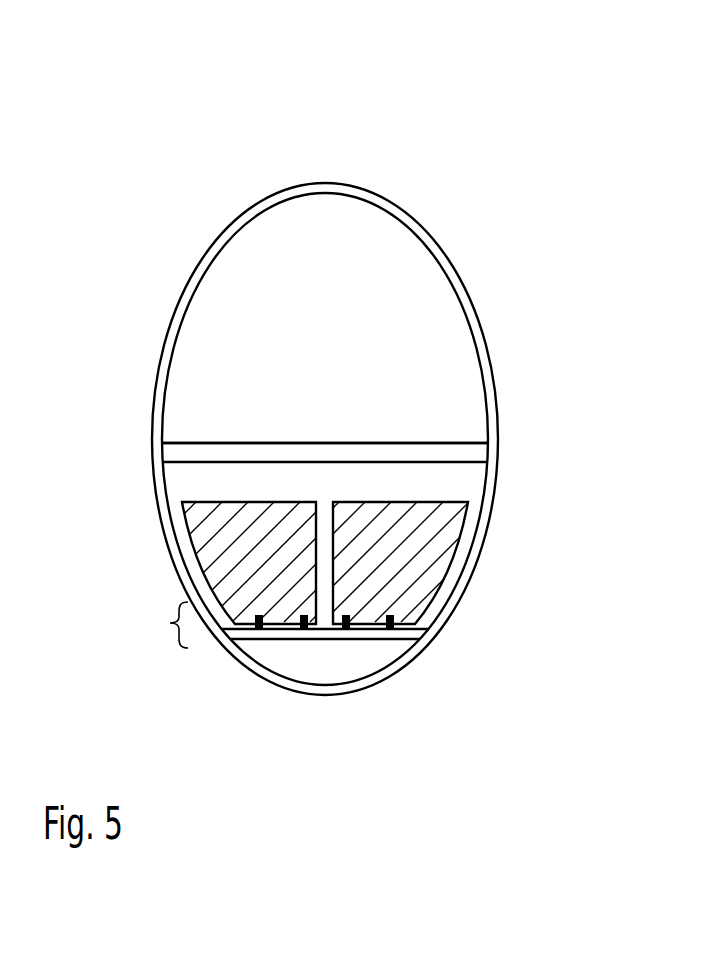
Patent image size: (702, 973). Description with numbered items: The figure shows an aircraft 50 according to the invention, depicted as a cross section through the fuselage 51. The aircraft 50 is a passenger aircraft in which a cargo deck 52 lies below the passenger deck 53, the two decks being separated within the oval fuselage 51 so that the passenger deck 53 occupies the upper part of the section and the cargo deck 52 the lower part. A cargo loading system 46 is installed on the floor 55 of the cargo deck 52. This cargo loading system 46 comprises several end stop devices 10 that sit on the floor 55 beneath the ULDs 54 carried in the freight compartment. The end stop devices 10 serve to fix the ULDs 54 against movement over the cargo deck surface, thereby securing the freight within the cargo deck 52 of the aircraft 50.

The aircraft 50 is at (442, 145).
The fuselage 51 is at (498, 397).
The cargo deck 52 is at (461, 478).
The passenger deck 53 is at (440, 335).
The ULD 54 is at (433, 535).
The floor 55 is at (410, 636).
The end stop device 10 is at (259, 628).
The cargo loading system 46 is at (170, 623).